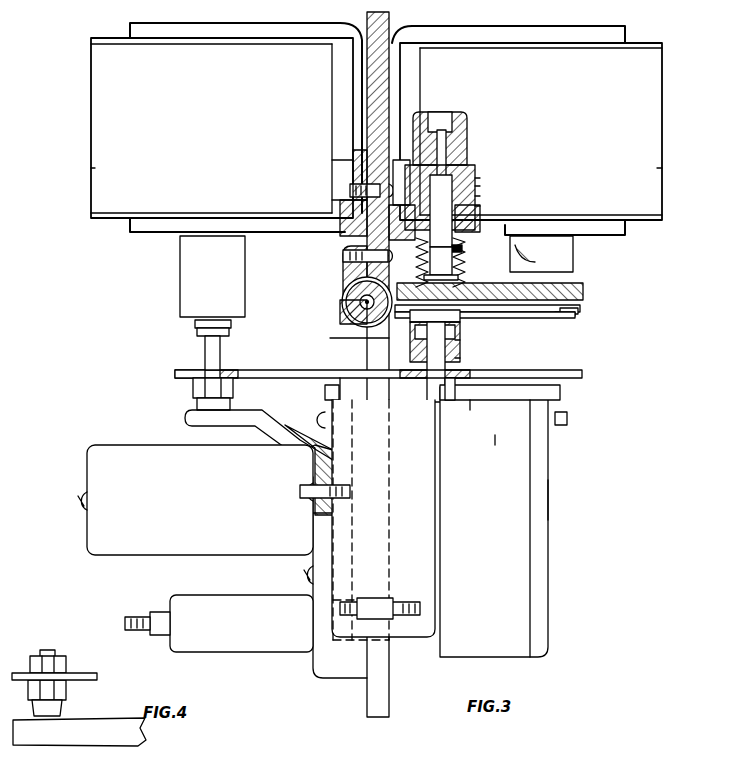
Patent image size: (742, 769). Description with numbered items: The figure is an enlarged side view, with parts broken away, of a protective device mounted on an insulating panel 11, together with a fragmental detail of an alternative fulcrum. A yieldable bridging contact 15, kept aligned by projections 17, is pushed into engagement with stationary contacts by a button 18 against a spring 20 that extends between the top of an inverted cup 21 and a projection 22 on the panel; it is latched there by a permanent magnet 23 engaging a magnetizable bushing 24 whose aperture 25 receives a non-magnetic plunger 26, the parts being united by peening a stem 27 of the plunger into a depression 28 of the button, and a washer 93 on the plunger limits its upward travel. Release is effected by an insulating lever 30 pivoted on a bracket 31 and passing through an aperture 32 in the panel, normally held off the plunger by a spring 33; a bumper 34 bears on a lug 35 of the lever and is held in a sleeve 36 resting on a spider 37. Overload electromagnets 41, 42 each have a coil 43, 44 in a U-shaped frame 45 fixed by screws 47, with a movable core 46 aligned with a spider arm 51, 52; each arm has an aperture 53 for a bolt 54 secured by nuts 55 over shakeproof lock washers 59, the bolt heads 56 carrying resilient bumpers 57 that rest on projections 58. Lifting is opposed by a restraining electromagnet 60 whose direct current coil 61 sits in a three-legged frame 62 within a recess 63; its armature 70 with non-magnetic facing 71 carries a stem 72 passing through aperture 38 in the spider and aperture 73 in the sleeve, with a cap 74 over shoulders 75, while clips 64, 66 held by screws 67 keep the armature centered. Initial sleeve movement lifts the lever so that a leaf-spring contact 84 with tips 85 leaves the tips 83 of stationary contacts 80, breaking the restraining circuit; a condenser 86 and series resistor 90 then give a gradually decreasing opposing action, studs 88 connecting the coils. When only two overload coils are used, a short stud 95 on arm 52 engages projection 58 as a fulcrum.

In FIG. 3, the panel 11 is at (389, 683).
In FIG. 3, the bridging contact 15 is at (470, 168).
In FIG. 3, the projections 17 is at (401, 165).
In FIG. 3, the button 18 is at (462, 128).
In FIG. 3, the spring 20 is at (478, 188).
In FIG. 3, the inverted cup 21 is at (476, 180).
In FIG. 3, the projection 22 is at (482, 216).
In FIG. 3, the permanent magnet 23 is at (478, 196).
In FIG. 3, the bushing 24 is at (478, 206).
In FIG. 3, the aperture 25 is at (345, 210).
In FIG. 3, the plunger 26 is at (458, 277).
In FIG. 3, the stem 27 is at (464, 152).
In FIG. 3, the depression 28 is at (444, 120).
In FIG. 3, the lever 30 is at (585, 288).
In FIG. 3, the bracket 31 is at (343, 270).
In FIG. 3, the aperture 32 is at (360, 343).
In FIG. 3, the spring 33 is at (466, 260).
In FIG. 3, the bumper 34 is at (352, 337).
In FIG. 3, the lug 35 is at (462, 318).
In FIG. 3, the sleeve 36 is at (462, 350).
In FIG. 3, the spider 37 is at (282, 368).
In FIG. 3, the aperture 38 is at (430, 385).
In FIG. 3, the overload electromagnet 41 is at (527, 123).
In FIG. 3, the overload electromagnet 42 is at (226, 120).
In FIG. 3, the coil 43 is at (91, 168).
In FIG. 3, the coil 44 is at (662, 168).
In FIG. 3, the U-shaped frame 45 is at (130, 232).
In FIG. 3, the movable core 46 is at (246, 296).
In FIG. 3, the screws 47 is at (350, 190).
In FIG. 3, the arm 51 is at (582, 373).
In FIG. 3, the arm 52 is at (175, 372).
In FIG. 4, the arm 52 is at (78, 673).
In FIG. 3, the aperture 53 is at (225, 370).
In FIG. 3, the bolt 54 is at (205, 352).
In FIG. 3, the nuts 55 is at (197, 332).
In FIG. 3, the heads 56 is at (193, 385).
In FIG. 3, the resilient bumpers 57 is at (197, 404).
In FIG. 3, the projections 58 is at (185, 418).
In FIG. 4, the projections 58 is at (42, 745).
In FIG. 3, the shakeproof lock washers 59 is at (195, 323).
In FIG. 3, the restraining electromagnet 60 is at (503, 521).
In FIG. 3, the direct current coil 61 is at (437, 460).
In FIG. 3, the three-legged frame 62 is at (549, 498).
In FIG. 3, the recess 63 is at (345, 688).
In FIG. 3, the clip 64 is at (498, 440).
In FIG. 3, the clip 66 is at (325, 400).
In FIG. 3, the screws 67 is at (325, 420).
In FIG. 3, the armature 70 is at (473, 420).
In FIG. 3, the non-magnetic facing 71 is at (340, 378).
In FIG. 3, the stem 72 is at (452, 395).
In FIG. 3, the aperture 73 is at (460, 358).
In FIG. 3, the cap 74 is at (418, 335).
In FIG. 3, the shoulders 75 is at (458, 340).
In FIG. 3, the stationary contacts 80 is at (570, 318).
In FIG. 3, the contact tips 83 is at (575, 315).
In FIG. 3, the contact 84 is at (582, 308).
In FIG. 3, the contact tips 85 is at (578, 311).
In FIG. 3, the condenser 86 is at (214, 514).
In FIG. 3, the studs 88 is at (400, 600).
In FIG. 3, the resistor 90 is at (219, 623).
In FIG. 3, the washer 93 is at (462, 248).
In FIG. 4, the stud 95 is at (44, 652).